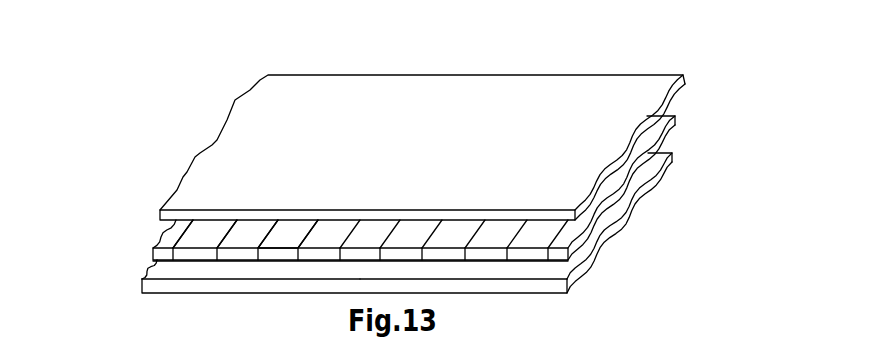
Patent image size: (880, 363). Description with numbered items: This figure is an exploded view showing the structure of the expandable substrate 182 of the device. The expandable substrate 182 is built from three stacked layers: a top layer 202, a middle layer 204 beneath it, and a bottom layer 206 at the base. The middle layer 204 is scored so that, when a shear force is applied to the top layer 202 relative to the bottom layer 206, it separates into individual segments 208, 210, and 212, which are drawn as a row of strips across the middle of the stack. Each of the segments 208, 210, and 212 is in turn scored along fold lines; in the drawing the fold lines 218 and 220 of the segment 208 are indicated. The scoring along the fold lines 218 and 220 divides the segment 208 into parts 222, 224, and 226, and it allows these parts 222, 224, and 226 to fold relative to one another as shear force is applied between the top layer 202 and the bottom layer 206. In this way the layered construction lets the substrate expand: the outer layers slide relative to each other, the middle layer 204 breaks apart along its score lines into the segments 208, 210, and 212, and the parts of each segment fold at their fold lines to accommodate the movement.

The expandable substrate 182 is at (153, 163).
The top layer 202 is at (674, 78).
The middle layer 204 is at (697, 118).
The bottom layer 206 is at (634, 204).
The segment 208 is at (233, 268).
The segment 210 is at (350, 270).
The segment 212 is at (500, 268).
The fold line 218 is at (235, 227).
The fold line 220 is at (282, 220).
The part 222 is at (210, 227).
The part 224 is at (259, 227).
The part 226 is at (313, 217).